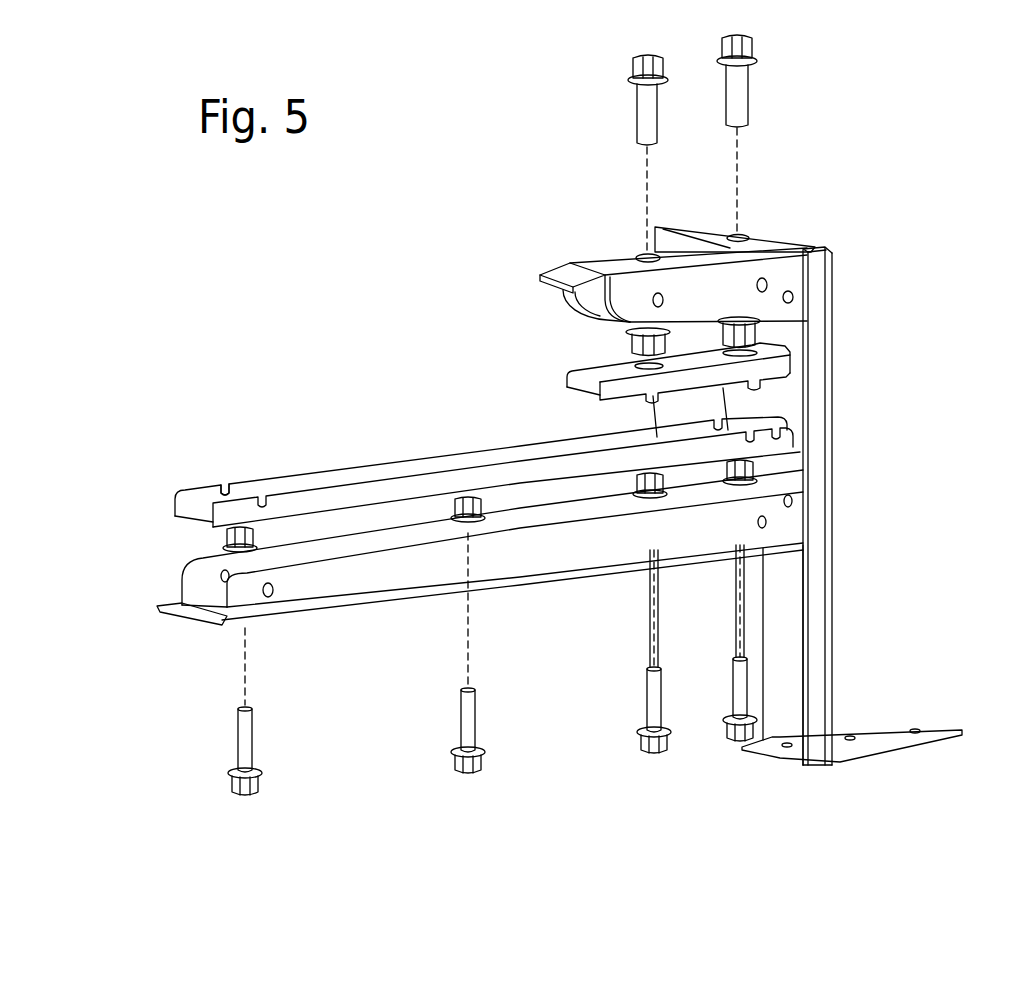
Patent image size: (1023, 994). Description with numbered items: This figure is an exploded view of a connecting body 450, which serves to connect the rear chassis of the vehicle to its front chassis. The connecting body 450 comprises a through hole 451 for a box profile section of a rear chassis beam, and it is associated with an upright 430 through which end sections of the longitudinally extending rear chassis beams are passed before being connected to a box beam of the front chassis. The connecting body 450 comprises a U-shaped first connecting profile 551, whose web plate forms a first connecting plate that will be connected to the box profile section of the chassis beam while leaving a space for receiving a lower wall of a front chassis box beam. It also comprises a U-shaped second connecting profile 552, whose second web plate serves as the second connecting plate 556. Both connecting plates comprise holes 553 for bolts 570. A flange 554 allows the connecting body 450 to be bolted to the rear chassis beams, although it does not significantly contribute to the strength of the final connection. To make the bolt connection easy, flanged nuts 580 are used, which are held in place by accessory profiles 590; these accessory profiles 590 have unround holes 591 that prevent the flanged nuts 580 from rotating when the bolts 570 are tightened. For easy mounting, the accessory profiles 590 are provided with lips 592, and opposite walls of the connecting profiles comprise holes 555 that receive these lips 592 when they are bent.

The connecting body 450 is at (330, 308).
The upright 430 is at (788, 337).
The through hole 451 is at (783, 645).
The first connecting profile 551 is at (331, 583).
The second connecting profile 552 is at (720, 292).
The holes 553 is at (635, 255).
The flange 554 is at (873, 732).
The holes 555 is at (268, 597).
The second connecting plate 556 is at (687, 254).
The bolts 570 is at (473, 728).
The flanged nuts 580 is at (370, 475).
The accessory profiles 590 is at (522, 472).
The unround holes 591 is at (768, 369).
The lips 592 is at (222, 487).